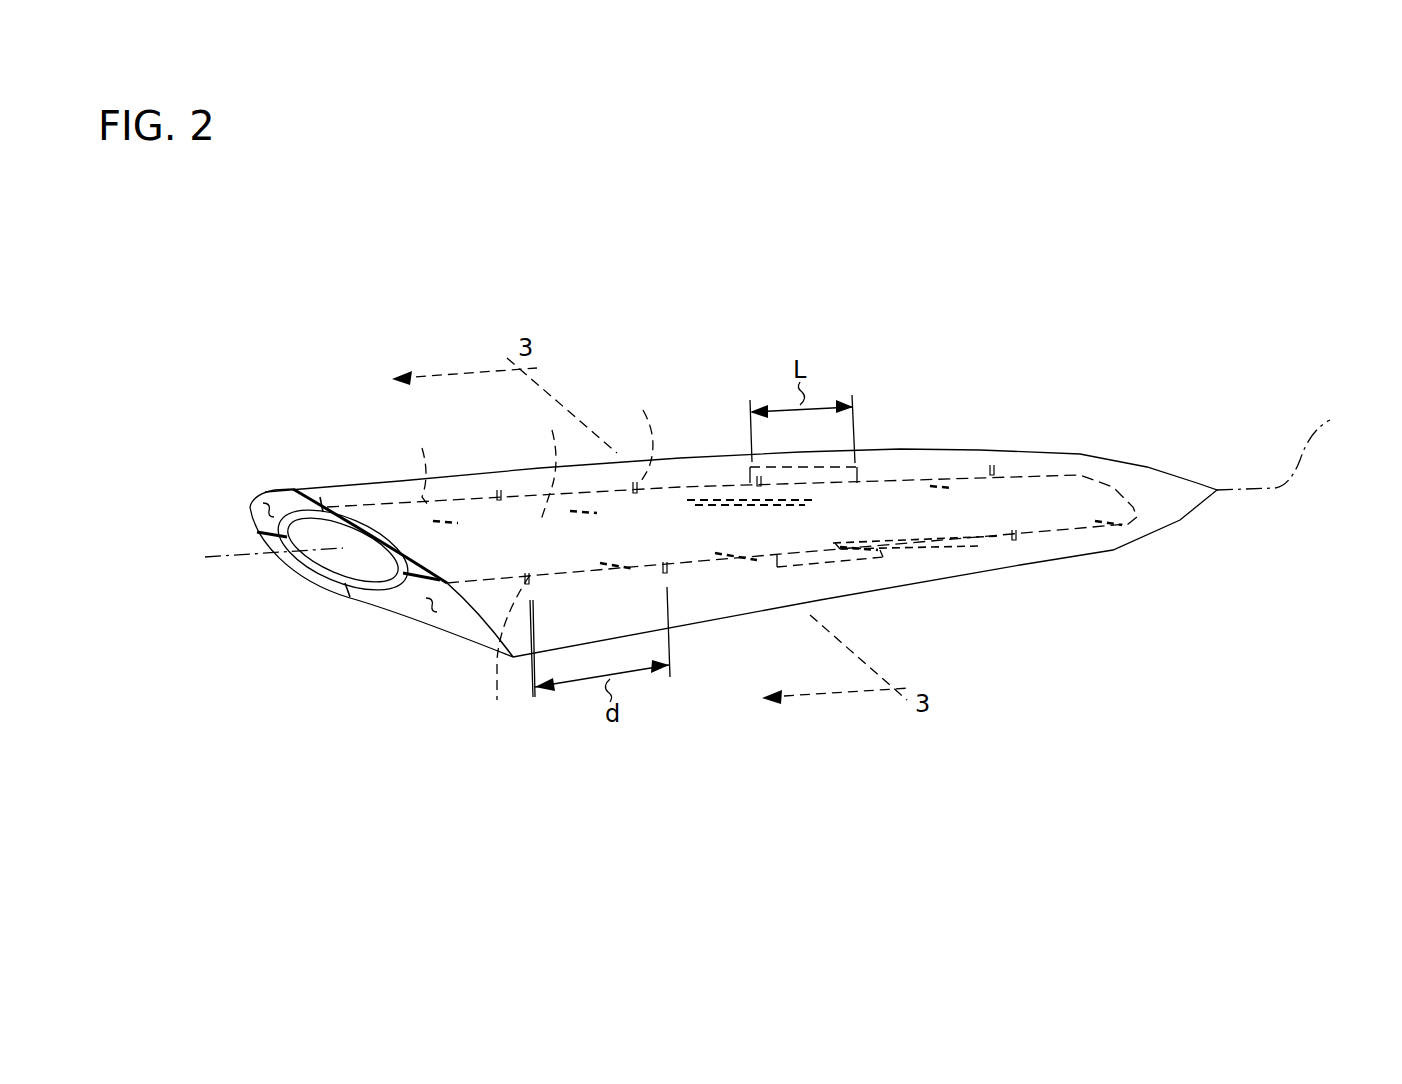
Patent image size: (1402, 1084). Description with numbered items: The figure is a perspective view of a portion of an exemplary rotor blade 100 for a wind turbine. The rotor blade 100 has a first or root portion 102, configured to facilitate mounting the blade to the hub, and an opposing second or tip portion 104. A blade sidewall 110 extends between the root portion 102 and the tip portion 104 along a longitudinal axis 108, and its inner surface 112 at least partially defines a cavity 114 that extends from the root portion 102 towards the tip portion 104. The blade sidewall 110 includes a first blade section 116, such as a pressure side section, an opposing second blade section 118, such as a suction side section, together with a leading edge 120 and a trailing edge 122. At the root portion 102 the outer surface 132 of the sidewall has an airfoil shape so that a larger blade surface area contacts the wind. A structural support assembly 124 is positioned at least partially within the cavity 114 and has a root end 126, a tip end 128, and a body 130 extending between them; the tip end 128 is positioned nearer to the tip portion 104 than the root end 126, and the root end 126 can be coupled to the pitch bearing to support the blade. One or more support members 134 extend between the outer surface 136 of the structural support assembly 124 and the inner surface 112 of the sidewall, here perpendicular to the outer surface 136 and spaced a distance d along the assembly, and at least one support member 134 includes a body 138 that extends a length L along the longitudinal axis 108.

The rotor blade 100 is at (292, 310).
The root portion 102 is at (558, 722).
The tip portion 104 is at (1155, 441).
The longitudinal axis 108 is at (792, 478).
The blade sidewall 110 is at (255, 520).
The inner surface 112 is at (430, 602).
The cavity 114 is at (258, 510).
The first blade section 116 is at (463, 461).
The second blade section 118 is at (430, 650).
The leading edge 120 is at (504, 470).
The trailing edge 122 is at (730, 620).
The structural support assembly 124 is at (421, 465).
The root end 126 is at (379, 503).
The tip end 128 is at (1042, 472).
The body 130 is at (1053, 530).
The outer surface 132 is at (345, 483).
The support members 134 is at (743, 556).
The outer surface 136 is at (546, 464).
The body 138 is at (840, 557).